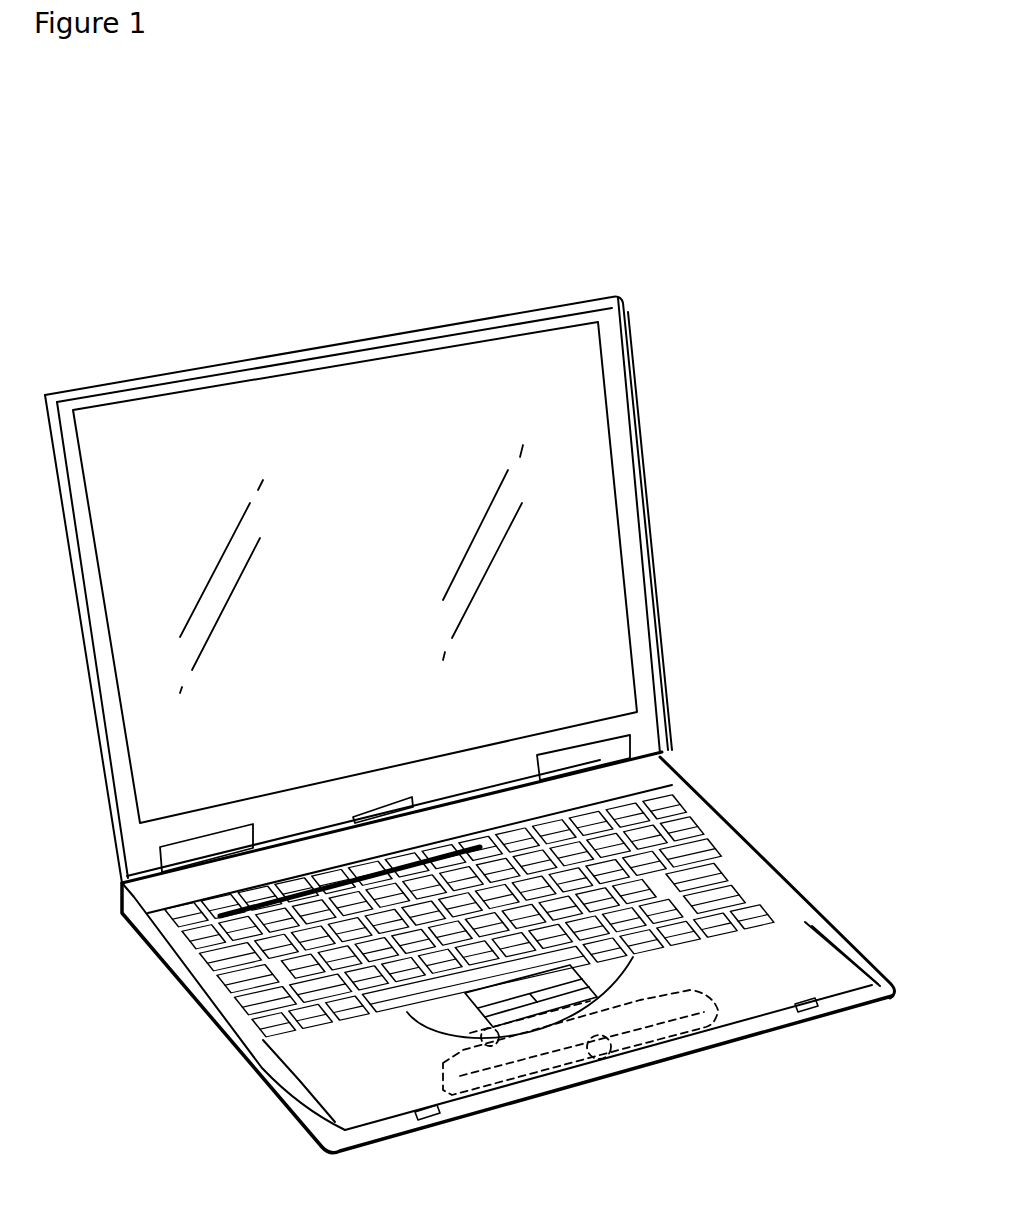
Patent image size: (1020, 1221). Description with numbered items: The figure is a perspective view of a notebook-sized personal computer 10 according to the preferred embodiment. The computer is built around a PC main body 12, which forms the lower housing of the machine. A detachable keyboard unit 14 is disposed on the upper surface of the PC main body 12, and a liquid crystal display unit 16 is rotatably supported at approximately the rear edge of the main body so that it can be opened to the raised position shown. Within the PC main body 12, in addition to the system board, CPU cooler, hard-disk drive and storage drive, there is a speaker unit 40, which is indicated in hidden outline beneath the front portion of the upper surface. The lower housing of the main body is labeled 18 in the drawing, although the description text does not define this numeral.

The notebook-sized personal computer 10 is at (698, 313).
The PC main body 12 is at (835, 920).
The keyboard unit 14 is at (683, 837).
The liquid crystal display unit 16 is at (544, 316).
The bottom housing 18 is at (305, 1143).
The speaker unit 40 is at (557, 1097).